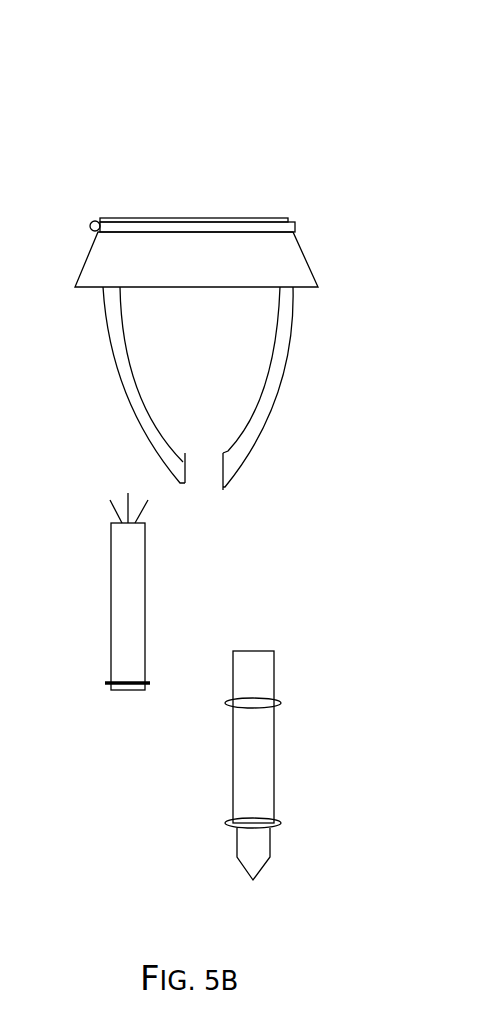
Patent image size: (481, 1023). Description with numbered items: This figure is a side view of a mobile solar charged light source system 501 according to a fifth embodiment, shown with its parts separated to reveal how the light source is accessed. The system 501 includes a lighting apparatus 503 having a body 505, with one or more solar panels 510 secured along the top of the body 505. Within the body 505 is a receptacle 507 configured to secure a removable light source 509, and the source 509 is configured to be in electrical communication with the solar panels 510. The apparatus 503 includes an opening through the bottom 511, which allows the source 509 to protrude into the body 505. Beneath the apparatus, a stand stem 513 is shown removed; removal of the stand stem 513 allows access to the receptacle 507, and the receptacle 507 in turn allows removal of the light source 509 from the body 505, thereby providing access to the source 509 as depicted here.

The mobile solar charged light source system 501 is at (227, 70).
The lighting apparatus 503 is at (292, 428).
The body 505 is at (117, 362).
The receptacle 507 is at (185, 483).
The removable light source 509 is at (112, 580).
The solar panels 510 is at (212, 218).
The opening through the bottom 511 is at (206, 475).
The stand stem 513 is at (232, 755).